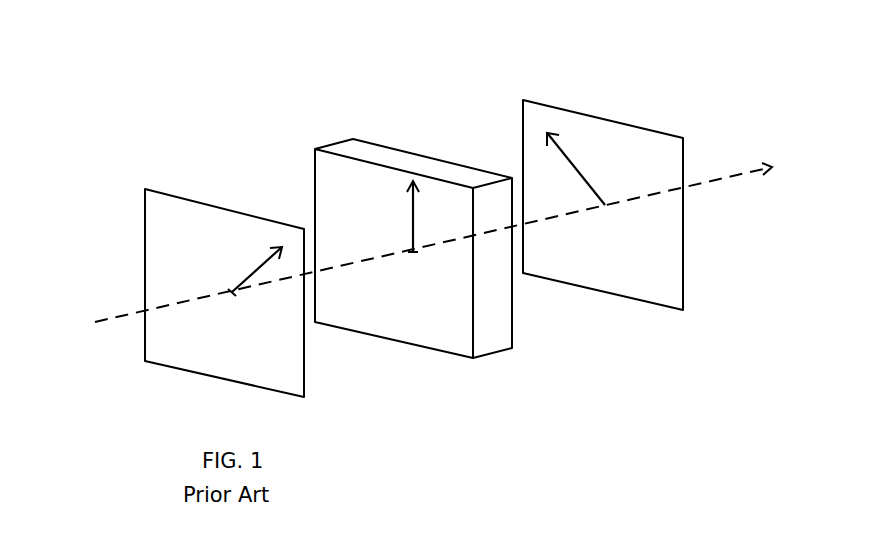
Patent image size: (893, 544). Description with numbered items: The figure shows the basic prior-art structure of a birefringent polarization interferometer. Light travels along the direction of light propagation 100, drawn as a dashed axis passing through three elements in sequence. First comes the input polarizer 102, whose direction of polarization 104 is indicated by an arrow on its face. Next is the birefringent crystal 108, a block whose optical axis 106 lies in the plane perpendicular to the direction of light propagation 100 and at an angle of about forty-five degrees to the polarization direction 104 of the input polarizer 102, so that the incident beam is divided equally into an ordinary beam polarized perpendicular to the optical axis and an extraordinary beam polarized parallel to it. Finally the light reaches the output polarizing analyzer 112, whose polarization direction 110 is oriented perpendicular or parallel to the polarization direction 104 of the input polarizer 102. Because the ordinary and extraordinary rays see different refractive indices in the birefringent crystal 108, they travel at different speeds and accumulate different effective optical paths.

The direction of the light propagation 100 is at (703, 191).
The input polarizer 102 is at (143, 210).
The direction of polarization of the input polarizer 104 is at (242, 273).
The optical axis of the birefringent crystal 106 is at (402, 208).
The birefringent crystal 108 is at (333, 140).
The polarization direction of the output analyzer 110 is at (538, 148).
The output polarizing analyzer 112 is at (612, 108).